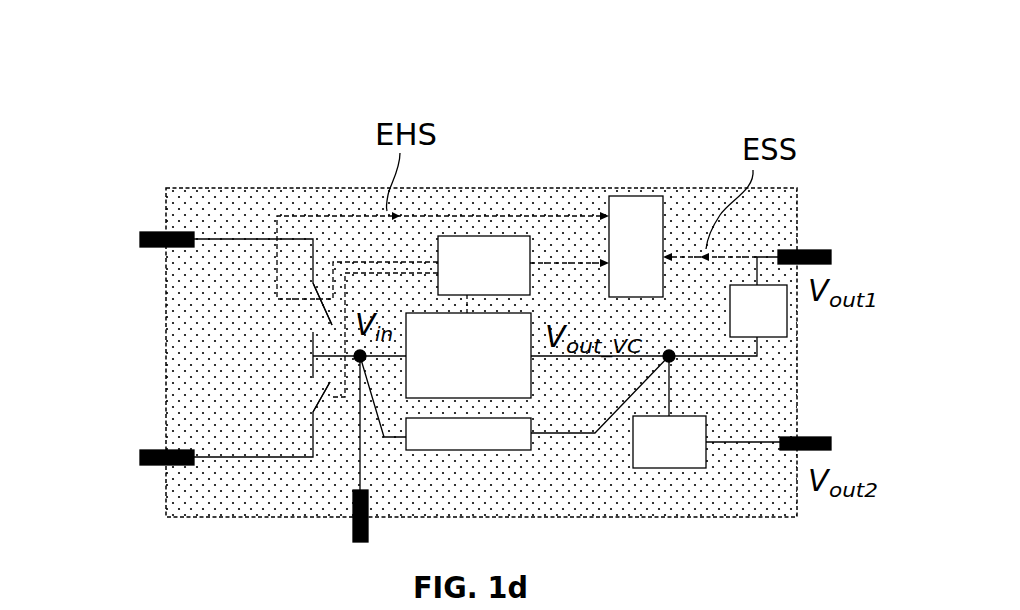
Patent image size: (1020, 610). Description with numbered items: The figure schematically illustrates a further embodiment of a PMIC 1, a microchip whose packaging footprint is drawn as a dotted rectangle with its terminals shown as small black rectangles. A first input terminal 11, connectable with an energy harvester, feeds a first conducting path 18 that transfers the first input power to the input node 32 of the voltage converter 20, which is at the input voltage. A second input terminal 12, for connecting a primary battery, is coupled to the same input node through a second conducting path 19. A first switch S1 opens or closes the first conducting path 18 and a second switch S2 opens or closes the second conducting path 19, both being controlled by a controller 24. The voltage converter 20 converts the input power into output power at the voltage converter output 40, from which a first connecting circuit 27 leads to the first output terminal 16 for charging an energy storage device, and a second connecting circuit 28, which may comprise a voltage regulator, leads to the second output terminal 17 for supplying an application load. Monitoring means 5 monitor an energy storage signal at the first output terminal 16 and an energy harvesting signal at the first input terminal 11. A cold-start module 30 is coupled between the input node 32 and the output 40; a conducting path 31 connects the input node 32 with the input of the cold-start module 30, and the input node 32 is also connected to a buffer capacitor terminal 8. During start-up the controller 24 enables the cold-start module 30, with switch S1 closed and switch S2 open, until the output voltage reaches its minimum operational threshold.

The PMIC 1 is at (191, 125).
The monitoring means 5 is at (636, 195).
The buffer capacitor terminal 8 is at (353, 525).
The first input terminal 11 is at (140, 239).
The second input terminal 12 is at (140, 457).
The first output terminal 16 is at (822, 250).
The second output terminal 17 is at (831, 440).
The first conducting path 18 is at (313, 260).
The second conducting path 19 is at (223, 457).
The voltage converter 20 is at (531, 373).
The controller 24 is at (502, 235).
The first connecting circuit 27 is at (787, 315).
The second connecting circuit 28 is at (672, 468).
The cold-start module 30 is at (495, 450).
The conducting path 31 is at (393, 437).
The input node 32 is at (360, 356).
The voltage converter output 40 is at (669, 356).
The first switch S1 is at (318, 310).
The second switch S2 is at (316, 395).